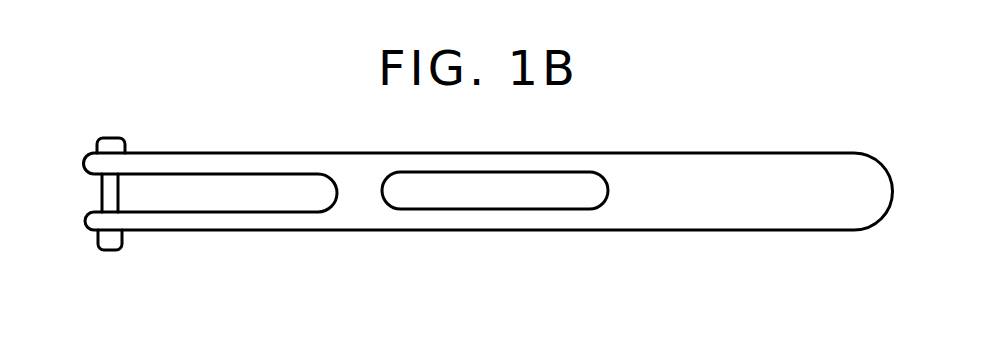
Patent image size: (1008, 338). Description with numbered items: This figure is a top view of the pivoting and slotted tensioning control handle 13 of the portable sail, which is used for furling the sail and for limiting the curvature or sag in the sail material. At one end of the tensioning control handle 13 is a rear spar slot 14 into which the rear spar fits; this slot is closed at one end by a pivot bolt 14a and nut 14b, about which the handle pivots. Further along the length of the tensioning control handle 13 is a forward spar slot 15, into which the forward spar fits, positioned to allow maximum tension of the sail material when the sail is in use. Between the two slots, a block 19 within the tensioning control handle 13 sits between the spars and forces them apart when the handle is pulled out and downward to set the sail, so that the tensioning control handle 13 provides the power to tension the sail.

The tensioning control handle 13 is at (570, 153).
The rear spar slot 14 is at (240, 200).
The pivot bolt 14a is at (118, 193).
The nut 14b is at (124, 238).
The forward spar slot 15 is at (488, 198).
The block 19 is at (360, 198).